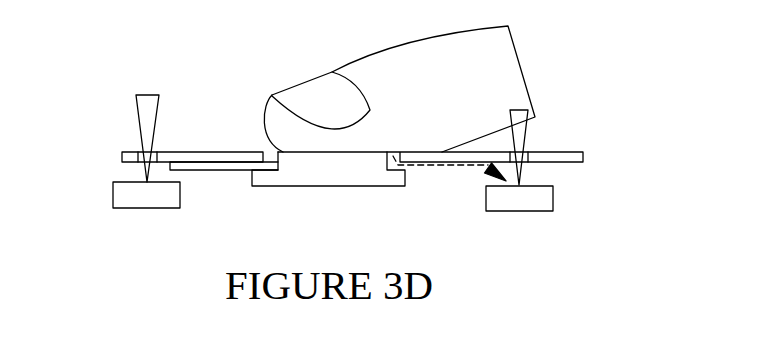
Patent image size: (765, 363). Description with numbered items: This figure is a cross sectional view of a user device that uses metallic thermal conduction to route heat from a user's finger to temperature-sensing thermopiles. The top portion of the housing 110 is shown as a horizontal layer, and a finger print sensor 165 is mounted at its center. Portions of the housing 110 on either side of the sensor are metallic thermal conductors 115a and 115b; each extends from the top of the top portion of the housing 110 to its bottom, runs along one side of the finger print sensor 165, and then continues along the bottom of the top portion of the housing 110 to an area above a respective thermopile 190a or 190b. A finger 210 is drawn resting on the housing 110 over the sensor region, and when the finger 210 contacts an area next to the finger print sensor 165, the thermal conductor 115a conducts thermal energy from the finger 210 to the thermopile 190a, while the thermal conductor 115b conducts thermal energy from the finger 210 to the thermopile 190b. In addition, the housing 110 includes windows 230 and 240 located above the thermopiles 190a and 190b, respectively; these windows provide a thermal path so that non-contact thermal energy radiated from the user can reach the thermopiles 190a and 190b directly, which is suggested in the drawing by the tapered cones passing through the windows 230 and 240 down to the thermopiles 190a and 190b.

The housing 110 is at (583, 157).
The thermal conductor 115a is at (263, 153).
The thermal conductor 115b is at (393, 157).
The finger print sensor 165 is at (330, 188).
The thermopile 190a is at (147, 208).
The thermopile 190b is at (520, 211).
The finger 210 is at (518, 47).
The window 230 is at (134, 153).
The window 240 is at (533, 153).